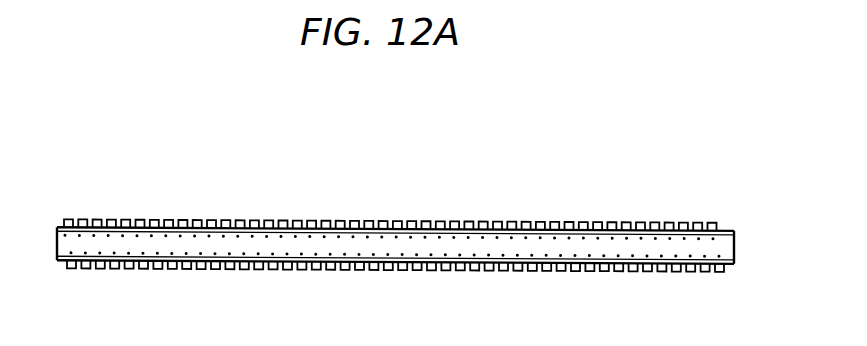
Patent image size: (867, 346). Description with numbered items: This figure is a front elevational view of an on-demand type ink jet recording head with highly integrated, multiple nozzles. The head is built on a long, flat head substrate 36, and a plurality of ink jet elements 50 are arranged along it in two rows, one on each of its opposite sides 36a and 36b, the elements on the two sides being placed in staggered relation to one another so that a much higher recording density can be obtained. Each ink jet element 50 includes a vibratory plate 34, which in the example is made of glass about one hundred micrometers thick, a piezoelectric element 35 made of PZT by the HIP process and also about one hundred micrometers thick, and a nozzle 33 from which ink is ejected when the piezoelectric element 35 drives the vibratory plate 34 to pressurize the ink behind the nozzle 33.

The nozzle 33 is at (432, 237).
The vibratory plate 34 is at (290, 227).
The piezoelectric element 35 is at (237, 219).
The head substrate 36 is at (728, 250).
The side of head substrate 36a is at (352, 231).
The side of head substrate 36b is at (393, 262).
The ink jet element 50 is at (181, 220).